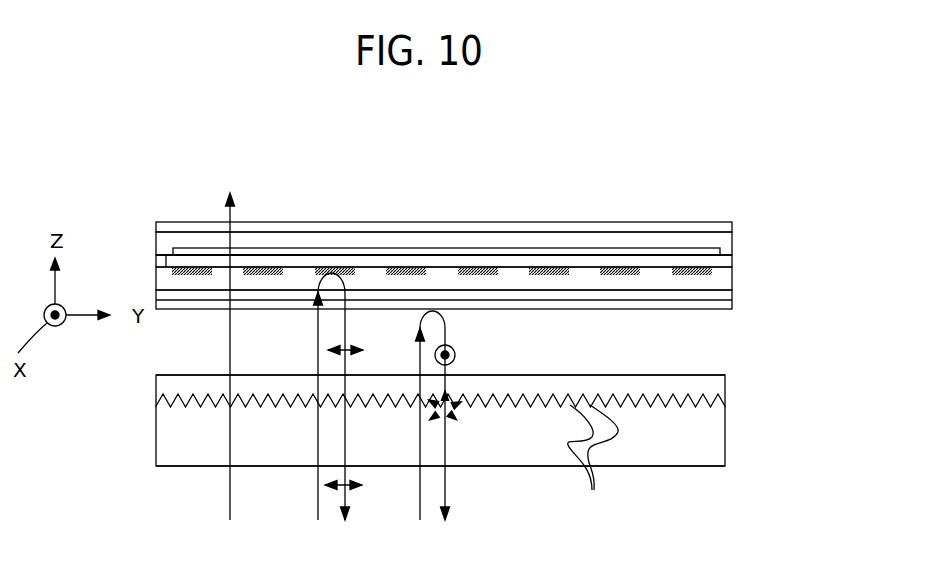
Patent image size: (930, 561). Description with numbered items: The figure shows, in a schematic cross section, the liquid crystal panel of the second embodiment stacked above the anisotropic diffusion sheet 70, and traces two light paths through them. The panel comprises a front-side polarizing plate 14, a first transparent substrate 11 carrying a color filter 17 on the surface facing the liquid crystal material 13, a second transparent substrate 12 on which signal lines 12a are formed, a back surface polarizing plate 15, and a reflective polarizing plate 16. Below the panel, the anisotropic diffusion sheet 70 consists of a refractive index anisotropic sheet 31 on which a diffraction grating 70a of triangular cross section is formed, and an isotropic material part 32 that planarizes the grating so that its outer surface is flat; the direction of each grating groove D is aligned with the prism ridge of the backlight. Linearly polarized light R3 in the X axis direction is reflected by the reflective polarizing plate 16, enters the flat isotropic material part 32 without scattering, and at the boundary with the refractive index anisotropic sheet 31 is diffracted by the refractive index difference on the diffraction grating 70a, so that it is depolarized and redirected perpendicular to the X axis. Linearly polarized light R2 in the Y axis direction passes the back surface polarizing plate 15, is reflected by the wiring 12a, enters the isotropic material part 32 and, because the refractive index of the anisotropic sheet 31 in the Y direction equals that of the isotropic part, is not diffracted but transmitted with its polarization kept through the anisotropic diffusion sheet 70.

The front-side polarizing plate 14 is at (732, 222).
The first transparent substrate 11 is at (732, 232).
The color filter 17 is at (325, 250).
The liquid crystal material 13 is at (423, 260).
The second transparent substrate 12 is at (732, 253).
The signal lines 12a is at (483, 267).
The back surface polarizing plate 15 is at (732, 273).
The reflective polarizing plate 16 is at (732, 310).
The linearly polarized light R2 is at (358, 346).
The linearly polarized light R3 is at (455, 350).
The anisotropic diffusion sheet 70 is at (487, 422).
The diffraction grating 70a is at (441, 369).
The isotropic material part 32 is at (481, 395).
The refractive index anisotropic sheet 31 is at (715, 438).
The grating groove D is at (593, 461).